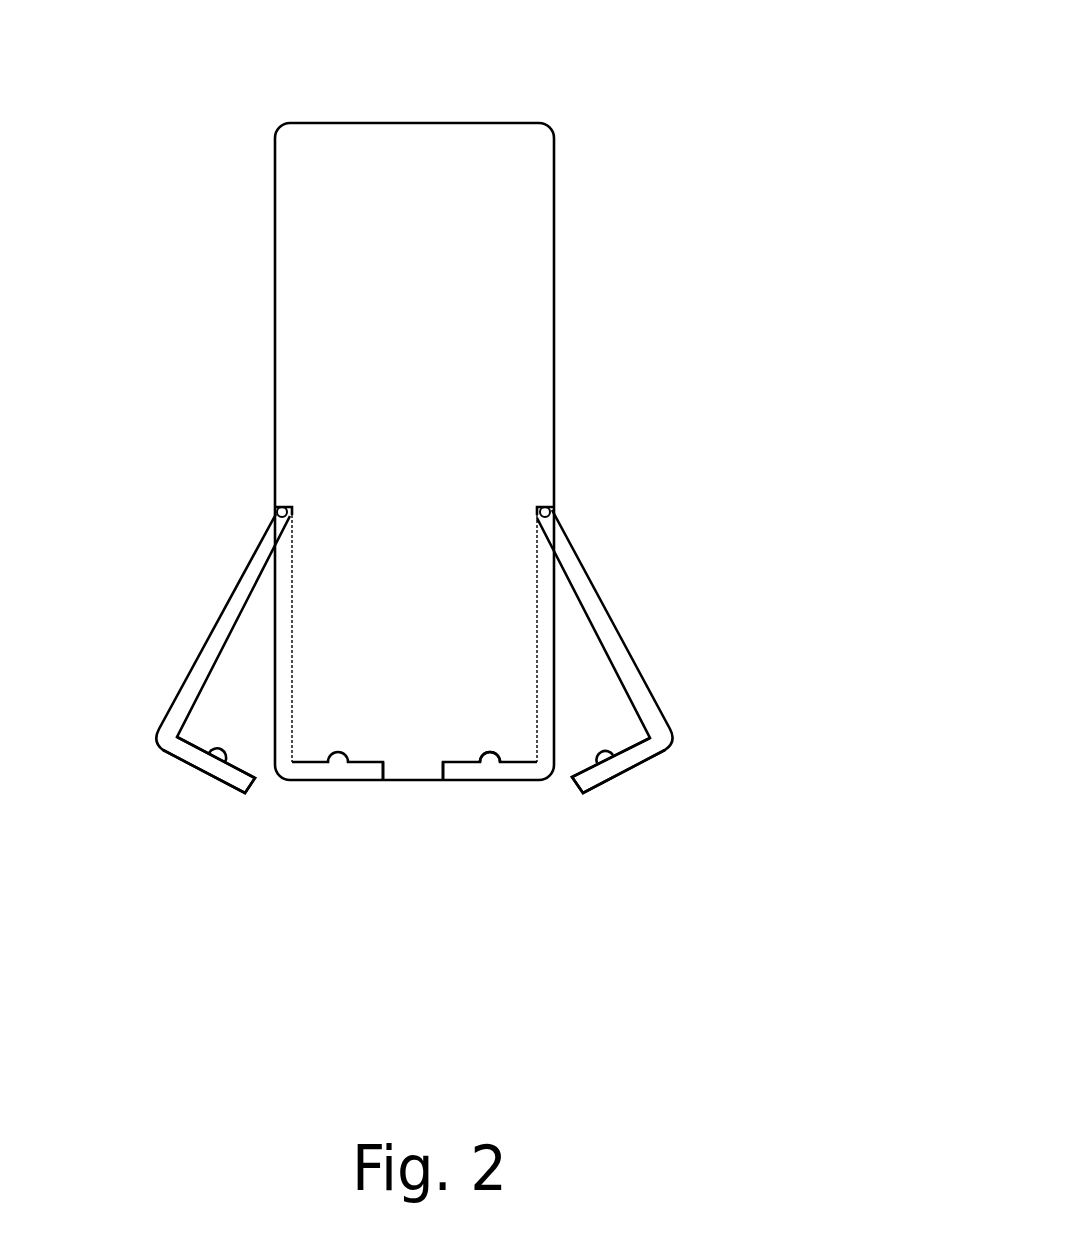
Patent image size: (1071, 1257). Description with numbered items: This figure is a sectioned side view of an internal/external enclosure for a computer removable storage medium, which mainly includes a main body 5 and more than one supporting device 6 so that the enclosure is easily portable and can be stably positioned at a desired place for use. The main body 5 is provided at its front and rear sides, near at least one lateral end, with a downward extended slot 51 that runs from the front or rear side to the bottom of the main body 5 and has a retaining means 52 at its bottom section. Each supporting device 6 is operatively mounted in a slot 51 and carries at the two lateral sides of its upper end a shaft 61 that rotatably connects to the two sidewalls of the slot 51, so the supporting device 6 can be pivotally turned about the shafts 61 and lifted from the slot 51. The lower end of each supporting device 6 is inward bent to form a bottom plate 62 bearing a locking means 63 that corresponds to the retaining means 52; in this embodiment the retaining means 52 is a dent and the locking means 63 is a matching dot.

The main body 5 is at (507, 460).
The slot 51 is at (547, 605).
The retaining means 52 is at (490, 758).
The supporting device 6 is at (464, 625).
The shaft 61 is at (280, 510).
The bottom plate 62 is at (613, 770).
The locking means 63 is at (489, 720).